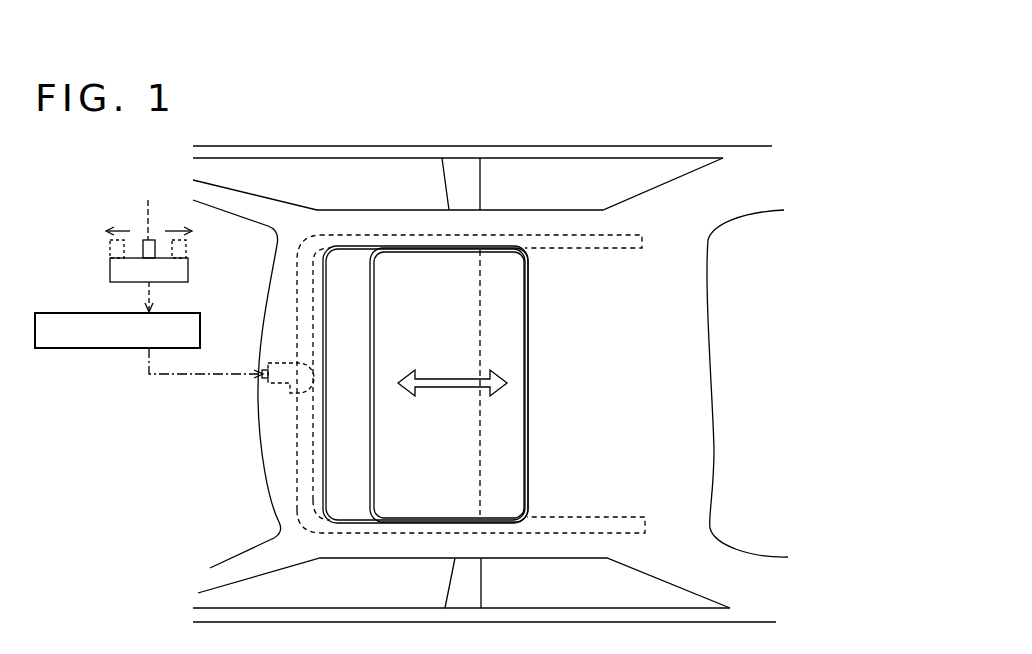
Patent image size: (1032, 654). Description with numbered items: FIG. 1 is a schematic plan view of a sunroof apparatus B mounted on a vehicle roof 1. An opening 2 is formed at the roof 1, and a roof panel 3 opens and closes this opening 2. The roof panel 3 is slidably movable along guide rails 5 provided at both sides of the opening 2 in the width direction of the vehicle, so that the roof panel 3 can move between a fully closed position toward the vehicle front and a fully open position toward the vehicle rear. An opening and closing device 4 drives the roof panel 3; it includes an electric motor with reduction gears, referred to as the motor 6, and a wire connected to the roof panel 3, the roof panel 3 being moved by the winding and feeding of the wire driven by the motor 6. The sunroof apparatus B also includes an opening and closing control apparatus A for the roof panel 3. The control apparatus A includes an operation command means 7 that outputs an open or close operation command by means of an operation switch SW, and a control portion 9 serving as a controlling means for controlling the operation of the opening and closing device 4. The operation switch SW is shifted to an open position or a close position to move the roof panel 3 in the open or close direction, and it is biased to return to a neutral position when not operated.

The roof 1 is at (702, 375).
The opening 2 is at (328, 336).
The roof panel 3 is at (512, 455).
The opening and closing device 4 is at (280, 398).
The guide rails 5 is at (557, 233).
The motor 6 is at (265, 364).
The operation command means 7 is at (146, 243).
The control portion 9 is at (178, 313).
The opening and closing control apparatus A is at (155, 392).
The sunroof apparatus B is at (531, 353).